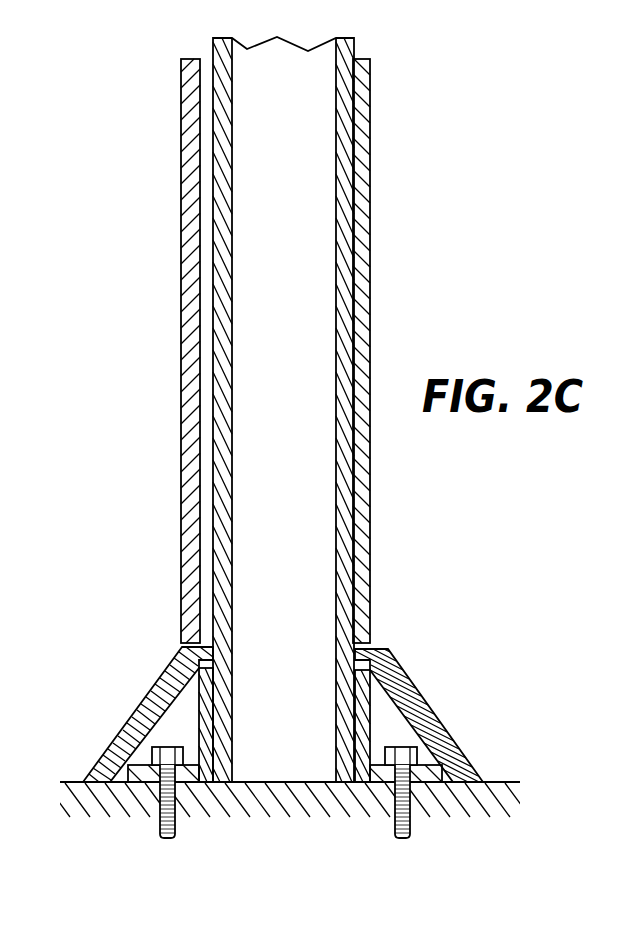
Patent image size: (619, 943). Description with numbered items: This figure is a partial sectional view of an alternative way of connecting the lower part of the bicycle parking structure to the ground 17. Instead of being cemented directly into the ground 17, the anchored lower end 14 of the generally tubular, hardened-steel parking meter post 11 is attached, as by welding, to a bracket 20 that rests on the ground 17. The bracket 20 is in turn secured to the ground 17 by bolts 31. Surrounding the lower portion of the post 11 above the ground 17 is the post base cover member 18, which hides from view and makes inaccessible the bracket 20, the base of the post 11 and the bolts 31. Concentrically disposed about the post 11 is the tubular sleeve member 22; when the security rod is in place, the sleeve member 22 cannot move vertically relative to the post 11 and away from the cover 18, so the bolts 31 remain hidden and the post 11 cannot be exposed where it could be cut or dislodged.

The parking meter post 11 is at (360, 273).
The anchored lower end 14 is at (233, 735).
The ground 17 is at (482, 798).
The post base cover member 18 is at (413, 690).
The bracket 20 is at (197, 698).
The tubular sleeve member 22 is at (370, 190).
The bolts 31 is at (167, 747).